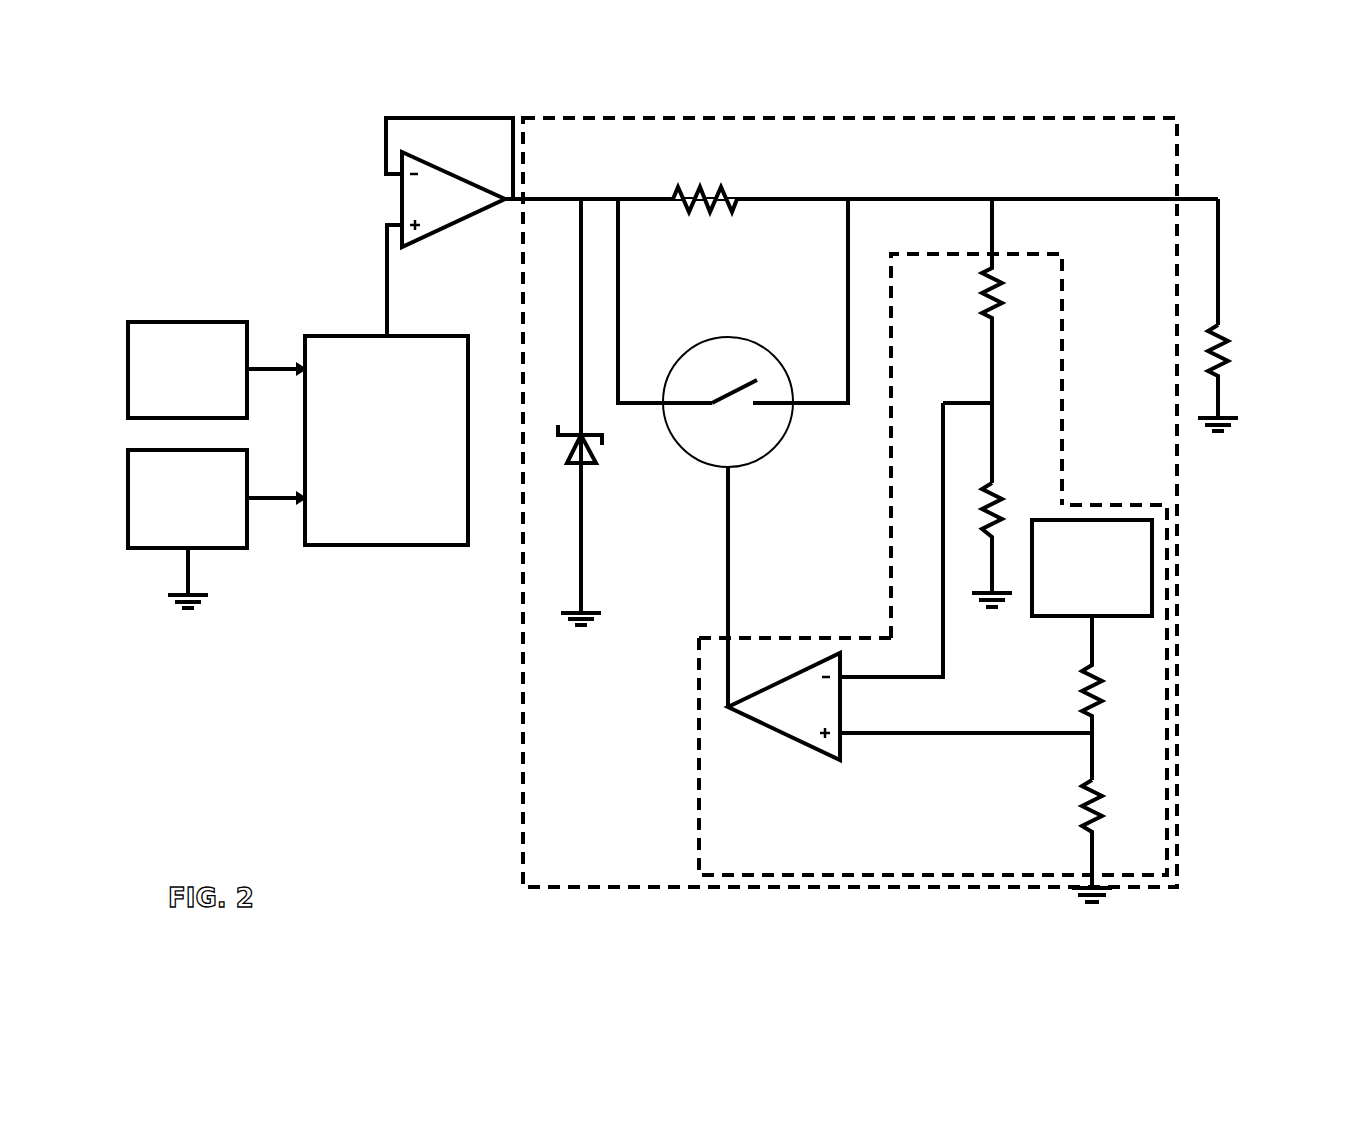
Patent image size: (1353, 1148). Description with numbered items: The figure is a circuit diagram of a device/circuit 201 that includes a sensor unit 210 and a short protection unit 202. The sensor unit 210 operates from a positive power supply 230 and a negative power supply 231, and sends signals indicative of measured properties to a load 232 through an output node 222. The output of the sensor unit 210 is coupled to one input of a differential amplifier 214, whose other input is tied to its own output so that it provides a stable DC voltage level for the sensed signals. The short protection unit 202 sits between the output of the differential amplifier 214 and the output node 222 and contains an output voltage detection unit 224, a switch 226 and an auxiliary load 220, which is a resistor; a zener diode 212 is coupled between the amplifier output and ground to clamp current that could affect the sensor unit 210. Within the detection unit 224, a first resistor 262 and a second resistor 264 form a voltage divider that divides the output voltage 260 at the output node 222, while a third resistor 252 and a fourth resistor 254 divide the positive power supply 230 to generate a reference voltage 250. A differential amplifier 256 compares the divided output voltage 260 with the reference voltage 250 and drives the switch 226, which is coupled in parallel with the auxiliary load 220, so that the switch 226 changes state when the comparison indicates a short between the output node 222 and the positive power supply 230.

The device/circuit 201 is at (250, 192).
The short protection unit 202 is at (521, 683).
The sensor unit 210 is at (386, 440).
The zener diode 212 is at (565, 455).
The differential amplifier 214 is at (490, 210).
The auxiliary load 220 is at (700, 187).
The output node 222 is at (1193, 197).
The output voltage detection unit 224 is at (698, 818).
The switch 226 is at (705, 340).
The positive power supply 230 is at (640, 469).
The negative power supply 231 is at (217, 529).
The load 232 is at (1215, 335).
The reference voltage 250 is at (972, 787).
The third resistor 252 is at (1088, 672).
The fourth resistor 254 is at (1100, 800).
The differential amplifier 256 is at (757, 717).
The output voltage 260 is at (976, 374).
The first resistor 262 is at (985, 290).
The second resistor 264 is at (990, 490).